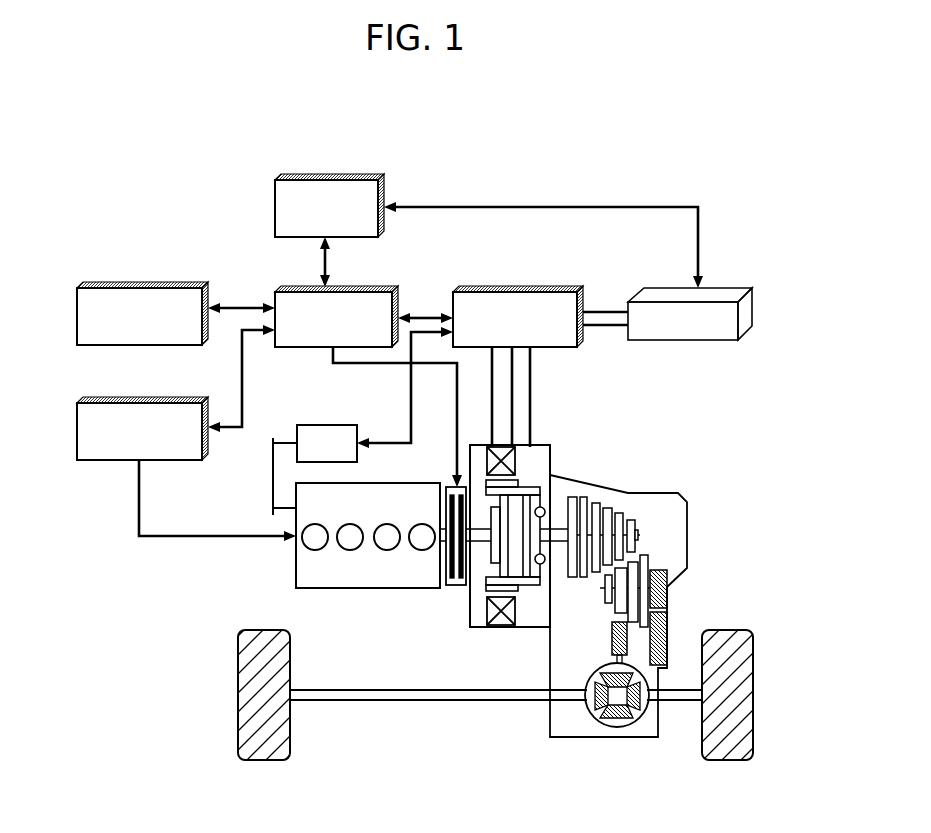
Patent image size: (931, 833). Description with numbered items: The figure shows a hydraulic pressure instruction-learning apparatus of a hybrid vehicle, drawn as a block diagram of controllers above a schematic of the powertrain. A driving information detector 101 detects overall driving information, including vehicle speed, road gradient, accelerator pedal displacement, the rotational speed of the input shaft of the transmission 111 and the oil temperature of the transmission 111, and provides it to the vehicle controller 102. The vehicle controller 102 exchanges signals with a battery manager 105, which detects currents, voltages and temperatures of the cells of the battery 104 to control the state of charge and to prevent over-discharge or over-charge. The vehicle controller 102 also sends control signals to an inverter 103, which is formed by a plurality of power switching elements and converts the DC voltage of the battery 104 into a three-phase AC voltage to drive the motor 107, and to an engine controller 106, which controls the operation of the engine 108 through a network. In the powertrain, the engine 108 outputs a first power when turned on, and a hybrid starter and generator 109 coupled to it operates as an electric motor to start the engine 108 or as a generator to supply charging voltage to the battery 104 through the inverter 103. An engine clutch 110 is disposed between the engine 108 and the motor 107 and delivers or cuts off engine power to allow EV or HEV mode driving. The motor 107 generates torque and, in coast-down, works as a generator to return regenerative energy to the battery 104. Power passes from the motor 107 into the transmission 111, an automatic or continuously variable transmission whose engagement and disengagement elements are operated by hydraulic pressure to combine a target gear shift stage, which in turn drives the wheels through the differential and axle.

The driving information detector 101 is at (147, 283).
The vehicle controller 102 is at (375, 287).
The inverter 103 is at (535, 287).
The battery 104 is at (745, 287).
The battery manager 105 is at (362, 175).
The engine controller 106 is at (144, 397).
The motor 107 is at (540, 462).
The engine 108 is at (304, 562).
The hybrid starter and generator (HSG) 109 is at (323, 424).
The engine clutch 110 is at (451, 590).
The transmission 111 is at (655, 491).